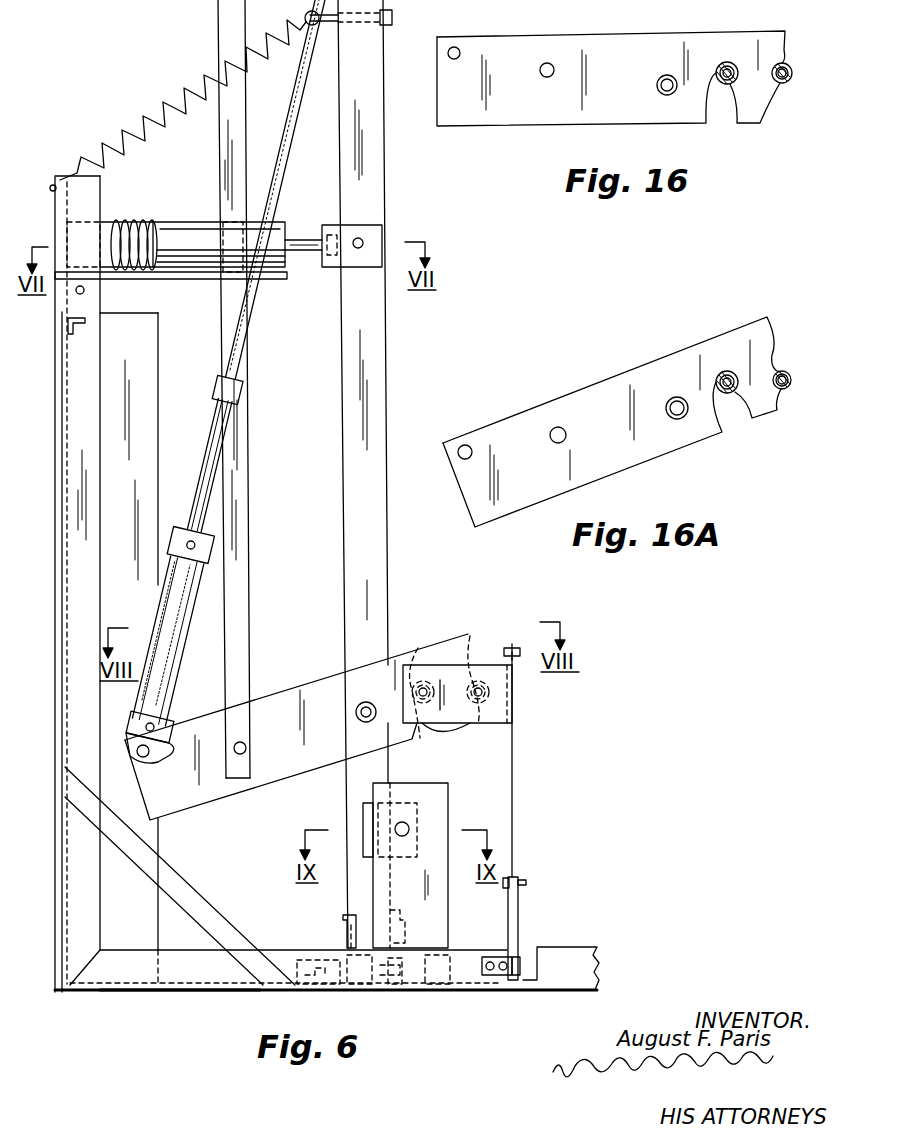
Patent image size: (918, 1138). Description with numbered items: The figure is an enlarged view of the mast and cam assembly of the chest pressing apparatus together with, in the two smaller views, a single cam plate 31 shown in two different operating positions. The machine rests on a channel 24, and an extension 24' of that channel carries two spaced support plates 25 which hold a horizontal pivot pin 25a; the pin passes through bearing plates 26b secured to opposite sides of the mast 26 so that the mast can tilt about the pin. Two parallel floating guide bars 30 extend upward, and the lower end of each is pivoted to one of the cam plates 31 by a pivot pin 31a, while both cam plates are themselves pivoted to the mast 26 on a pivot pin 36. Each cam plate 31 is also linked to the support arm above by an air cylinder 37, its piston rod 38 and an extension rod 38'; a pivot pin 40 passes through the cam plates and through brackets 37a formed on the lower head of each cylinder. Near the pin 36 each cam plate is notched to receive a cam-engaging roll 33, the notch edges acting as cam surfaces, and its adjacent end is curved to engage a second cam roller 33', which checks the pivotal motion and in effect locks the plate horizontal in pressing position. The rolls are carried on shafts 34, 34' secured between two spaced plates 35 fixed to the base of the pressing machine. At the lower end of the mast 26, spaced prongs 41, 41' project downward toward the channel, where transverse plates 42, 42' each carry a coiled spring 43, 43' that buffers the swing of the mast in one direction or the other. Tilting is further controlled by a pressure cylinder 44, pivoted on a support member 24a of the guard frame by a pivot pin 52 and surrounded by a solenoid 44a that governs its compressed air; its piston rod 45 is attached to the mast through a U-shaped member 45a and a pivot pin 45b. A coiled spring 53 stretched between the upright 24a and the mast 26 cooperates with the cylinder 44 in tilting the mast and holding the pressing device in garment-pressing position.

In FIG. 6, the channel 24 is at (327, 817).
In FIG. 6, the channel extension 24' is at (180, 998).
In FIG. 6, the support member of the guard frame 24a is at (75, 412).
In FIG. 6, the support plates 25 is at (438, 783).
In FIG. 6, the pivot pin 25a is at (410, 826).
In FIG. 6, the mast 26 is at (386, 337).
In FIG. 6, the bearing plates 26b is at (363, 815).
In FIG. 6, the floating guide bars 30 is at (251, 460).
In FIG. 6, the cam plates 31 is at (282, 690).
In FIG. 16, the cam plates 31 is at (597, 37).
In FIG. 16A, the cam plates 31 is at (625, 353).
In FIG. 6, the pivot pin 31a is at (246, 747).
In FIG. 16, the pivot pin 31a is at (548, 63).
In FIG. 16A, the pivot pin 31a is at (558, 427).
In FIG. 6, the cam-engaging roll 33 is at (415, 682).
In FIG. 16, the cam-engaging roll 33 is at (720, 107).
In FIG. 16A, the cam-engaging roll 33 is at (737, 411).
In FIG. 6, the cam roller 33' is at (482, 677).
In FIG. 16, the cam roller 33' is at (797, 92).
In FIG. 16A, the cam roller 33' is at (799, 400).
In FIG. 6, the shaft 34 is at (434, 721).
In FIG. 16, the shaft 34 is at (697, 44).
In FIG. 16A, the shaft 34 is at (706, 353).
In FIG. 6, the shaft 34' is at (516, 699).
In FIG. 16, the shaft 34' is at (795, 61).
In FIG. 16A, the shaft 34' is at (796, 366).
In FIG. 6, the plates 35 is at (442, 665).
In FIG. 6, the pivot pin 36 is at (360, 703).
In FIG. 16, the pivot pin 36 is at (659, 78).
In FIG. 16A, the pivot pin 36 is at (681, 420).
In FIG. 6, the air cylinder 37 is at (177, 674).
In FIG. 6, the bracket 37a is at (162, 760).
In FIG. 6, the piston rod 38 is at (199, 480).
In FIG. 6, the extension rod 38' is at (268, 202).
In FIG. 6, the pivot pin 40 is at (137, 752).
In FIG. 16, the pivot pin 40 is at (455, 47).
In FIG. 16A, the pivot pin 40 is at (463, 445).
In FIG. 6, the prongs 41 is at (332, 933).
In FIG. 6, the prong 41' is at (417, 926).
In FIG. 6, the plate 42 is at (305, 992).
In FIG. 6, the plate 42' is at (443, 990).
In FIG. 6, the coiled spring 43 is at (341, 990).
In FIG. 6, the coiled spring 43' is at (391, 991).
In FIG. 6, the pressure cylinder 44 is at (196, 222).
In FIG. 6, the solenoid 44a is at (134, 222).
In FIG. 6, the piston rod 45 is at (305, 240).
In FIG. 6, the U-shaped member 45a is at (365, 225).
In FIG. 6, the pivot pin 45b is at (357, 250).
In FIG. 6, the pivot pin 52 is at (77, 293).
In FIG. 6, the coiled spring 53 is at (149, 120).